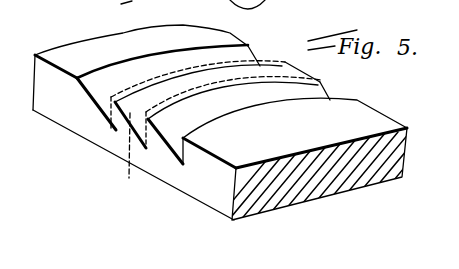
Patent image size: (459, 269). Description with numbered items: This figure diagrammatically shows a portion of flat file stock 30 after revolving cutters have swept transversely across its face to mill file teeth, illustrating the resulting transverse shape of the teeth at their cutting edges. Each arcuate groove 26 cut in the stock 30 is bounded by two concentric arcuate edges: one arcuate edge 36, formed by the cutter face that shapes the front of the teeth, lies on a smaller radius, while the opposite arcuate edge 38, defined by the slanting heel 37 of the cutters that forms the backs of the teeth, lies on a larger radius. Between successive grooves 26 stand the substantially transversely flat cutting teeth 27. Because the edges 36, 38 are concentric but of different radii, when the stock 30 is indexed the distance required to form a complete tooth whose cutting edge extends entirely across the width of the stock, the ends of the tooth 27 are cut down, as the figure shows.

The arcuate grooves 26 is at (90, 92).
The cutting teeth 27 is at (114, 128).
The file stock 30 is at (72, 46).
The arcuate edge of the groove 36 is at (151, 134).
The slanting heel of the cutters 37 is at (163, 150).
The opposite arcuate edge of the groove 38 is at (131, 176).